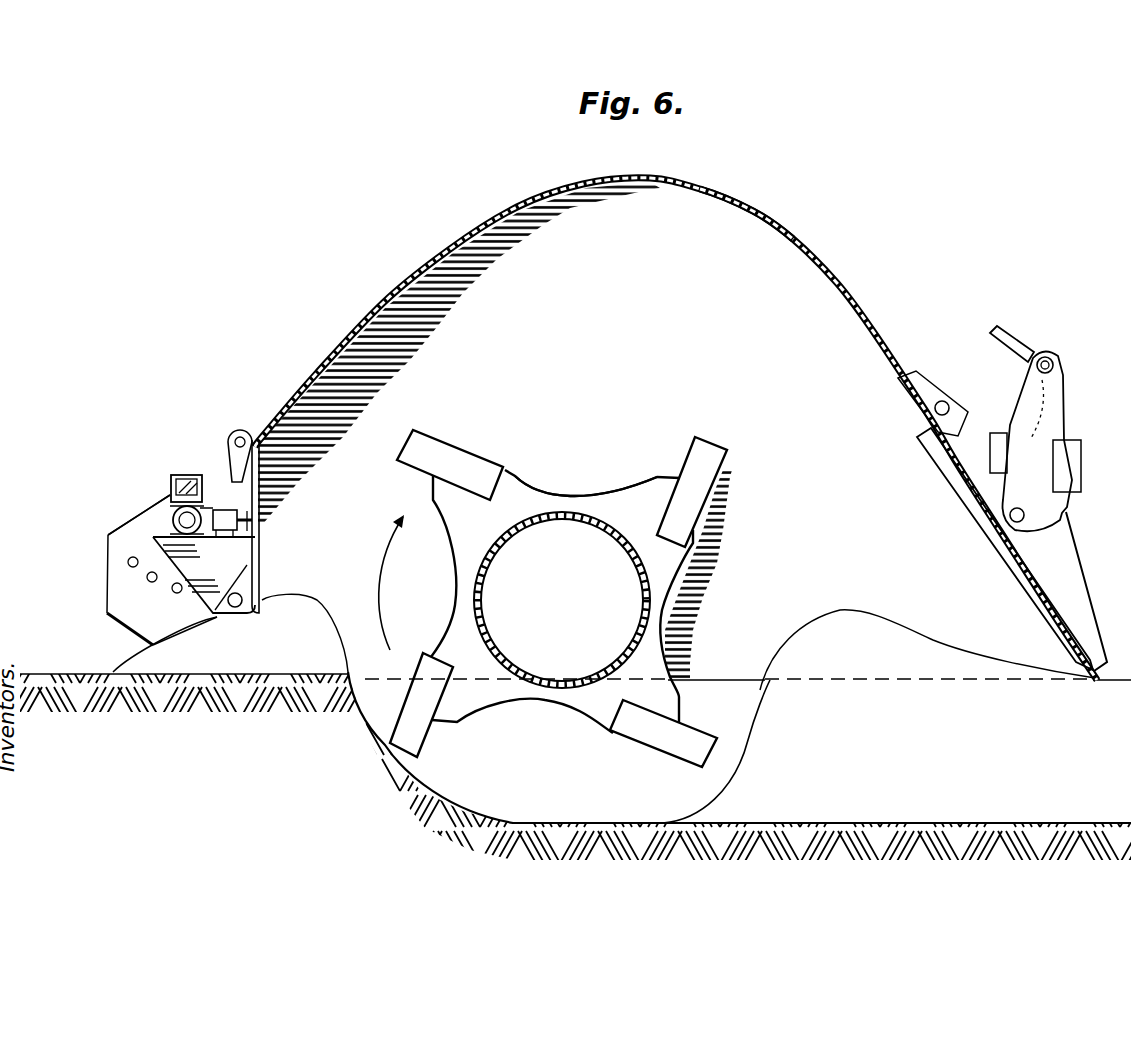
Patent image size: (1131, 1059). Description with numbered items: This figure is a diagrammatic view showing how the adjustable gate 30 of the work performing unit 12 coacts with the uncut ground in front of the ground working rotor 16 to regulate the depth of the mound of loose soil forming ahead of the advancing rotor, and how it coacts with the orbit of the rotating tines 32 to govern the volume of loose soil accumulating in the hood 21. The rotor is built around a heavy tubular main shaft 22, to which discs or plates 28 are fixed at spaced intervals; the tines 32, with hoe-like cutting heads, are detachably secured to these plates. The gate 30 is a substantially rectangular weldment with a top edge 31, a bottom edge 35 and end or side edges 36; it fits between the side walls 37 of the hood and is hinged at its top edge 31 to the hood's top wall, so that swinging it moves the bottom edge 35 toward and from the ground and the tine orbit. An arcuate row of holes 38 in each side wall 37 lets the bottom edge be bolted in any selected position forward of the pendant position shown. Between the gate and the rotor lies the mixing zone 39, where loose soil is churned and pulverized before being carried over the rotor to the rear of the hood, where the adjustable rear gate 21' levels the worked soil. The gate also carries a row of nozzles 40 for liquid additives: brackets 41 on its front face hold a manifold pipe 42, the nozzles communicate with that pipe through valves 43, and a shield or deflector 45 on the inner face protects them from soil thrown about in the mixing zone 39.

The work performing unit 12 is at (382, 302).
The ground working rotor 16 is at (620, 507).
The hood 21 is at (752, 205).
The adjustable rear gate 21' is at (1008, 498).
The main shaft 22 is at (563, 516).
The discs or plates 28 is at (518, 478).
The gate 30 is at (207, 593).
The top edge 31 is at (248, 430).
The tines 32 is at (430, 443).
The bottom edge 35 is at (233, 662).
The end or side edges 36 is at (232, 477).
The side walls 37 is at (145, 518).
The arcuate row of holes 38 is at (148, 578).
The mixing zone 39 is at (373, 447).
The nozzles 40 is at (246, 516).
The brackets 41 is at (142, 541).
The manifold pipe 42 is at (171, 486).
The valves 43 is at (220, 507).
The shield or deflector 45 is at (230, 557).